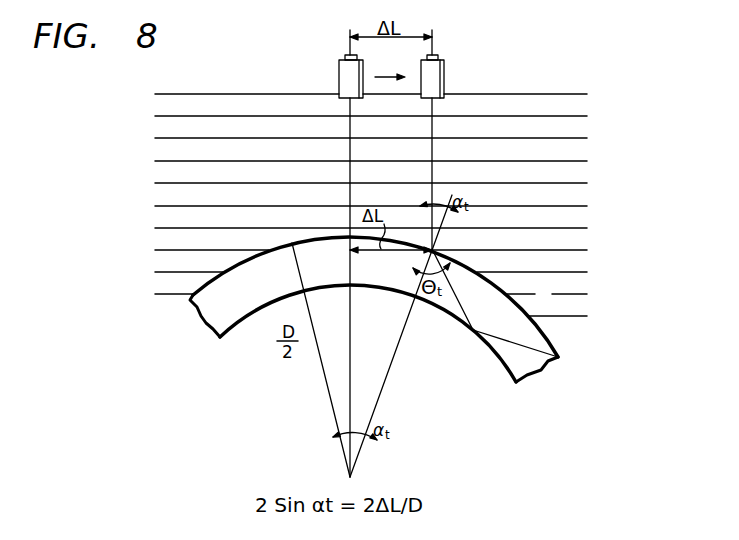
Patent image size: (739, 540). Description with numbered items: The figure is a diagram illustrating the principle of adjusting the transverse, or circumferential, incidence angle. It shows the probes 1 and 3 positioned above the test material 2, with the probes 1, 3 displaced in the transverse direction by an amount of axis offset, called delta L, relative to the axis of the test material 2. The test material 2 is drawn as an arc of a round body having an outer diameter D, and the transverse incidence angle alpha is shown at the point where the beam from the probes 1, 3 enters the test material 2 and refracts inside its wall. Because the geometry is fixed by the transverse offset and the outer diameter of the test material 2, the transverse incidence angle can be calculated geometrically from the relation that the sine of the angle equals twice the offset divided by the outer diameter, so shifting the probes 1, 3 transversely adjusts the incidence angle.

The probe 1 is at (351, 76).
The probe 3 is at (444, 69).
The test material 2 is at (533, 318).